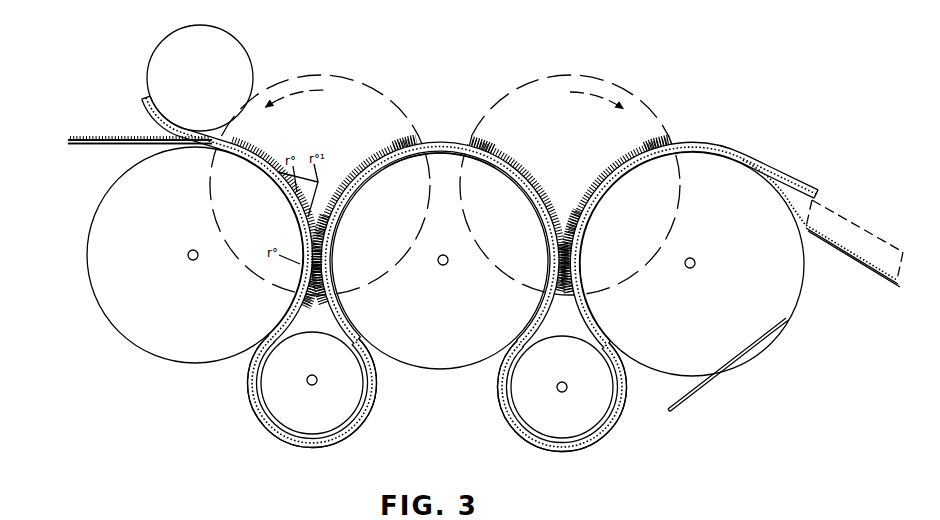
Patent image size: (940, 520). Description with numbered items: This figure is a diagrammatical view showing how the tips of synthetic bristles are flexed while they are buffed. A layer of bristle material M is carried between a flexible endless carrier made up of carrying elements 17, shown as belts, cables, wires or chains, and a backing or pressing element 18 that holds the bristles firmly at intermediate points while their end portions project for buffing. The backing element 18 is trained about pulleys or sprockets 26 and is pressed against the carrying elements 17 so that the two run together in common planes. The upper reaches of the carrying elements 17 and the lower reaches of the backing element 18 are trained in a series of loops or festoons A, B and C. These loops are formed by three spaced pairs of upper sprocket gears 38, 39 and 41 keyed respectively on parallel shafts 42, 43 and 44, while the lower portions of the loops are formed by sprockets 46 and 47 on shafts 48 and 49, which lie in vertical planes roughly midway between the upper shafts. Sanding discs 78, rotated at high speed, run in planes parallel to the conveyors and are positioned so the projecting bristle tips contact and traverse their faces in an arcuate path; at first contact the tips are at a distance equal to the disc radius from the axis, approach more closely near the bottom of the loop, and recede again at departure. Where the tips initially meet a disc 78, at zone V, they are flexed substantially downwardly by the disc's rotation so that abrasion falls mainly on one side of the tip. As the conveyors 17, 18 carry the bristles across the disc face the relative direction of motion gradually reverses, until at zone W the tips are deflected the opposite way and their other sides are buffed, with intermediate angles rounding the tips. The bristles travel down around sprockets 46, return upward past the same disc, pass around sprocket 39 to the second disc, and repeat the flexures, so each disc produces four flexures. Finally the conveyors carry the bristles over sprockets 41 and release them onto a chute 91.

The receiving or carrying elements 17 is at (82, 147).
The backing, pressing or holding elements 18 is at (199, 132).
The pulleys or sprockets 26 is at (150, 79).
The upper sprocket gears 38 is at (86, 247).
The upper sprocket gears 39 is at (438, 369).
The upper sprocket gears 41 is at (798, 297).
The shaft 42 is at (193, 260).
The shaft 43 is at (443, 265).
The shaft 44 is at (690, 268).
The sprockets 46 is at (313, 422).
The sprockets 47 is at (583, 420).
The shaft 48 is at (306, 380).
The shaft 49 is at (556, 386).
The sanding discs 78 is at (273, 83).
The chute 91 is at (855, 222).
The loop A is at (246, 393).
The loop B is at (443, 139).
The loop C is at (617, 422).
The bristle material M is at (107, 138).
The zone of initial contact V is at (226, 170).
The zone of reversed deflection W is at (313, 290).